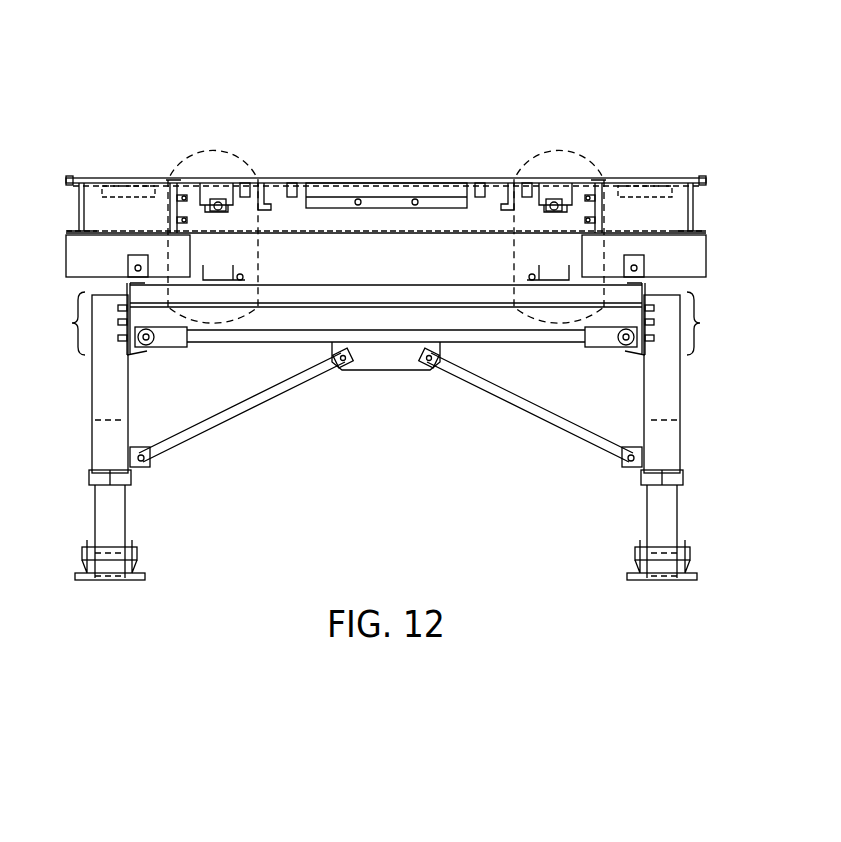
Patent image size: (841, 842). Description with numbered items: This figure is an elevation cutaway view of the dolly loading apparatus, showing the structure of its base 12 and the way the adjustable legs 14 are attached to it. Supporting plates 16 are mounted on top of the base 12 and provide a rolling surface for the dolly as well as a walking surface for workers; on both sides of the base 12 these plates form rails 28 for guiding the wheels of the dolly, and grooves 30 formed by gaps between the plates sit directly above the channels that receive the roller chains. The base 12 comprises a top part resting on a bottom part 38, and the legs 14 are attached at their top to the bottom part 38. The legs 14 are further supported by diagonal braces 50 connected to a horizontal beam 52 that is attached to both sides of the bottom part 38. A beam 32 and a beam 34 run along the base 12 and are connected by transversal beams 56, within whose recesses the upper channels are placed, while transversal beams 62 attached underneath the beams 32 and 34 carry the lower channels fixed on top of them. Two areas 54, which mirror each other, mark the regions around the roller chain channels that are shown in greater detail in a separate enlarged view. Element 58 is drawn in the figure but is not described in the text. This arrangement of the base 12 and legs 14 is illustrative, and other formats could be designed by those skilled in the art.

The base 12 is at (742, 175).
The adjustable legs 14 is at (112, 513).
The supporting plates 16 is at (92, 178).
The rails 28 is at (168, 180).
The grooves 30 is at (222, 160).
The beam 32 is at (655, 207).
The beam 34 is at (118, 207).
The bottom part 38 is at (386, 319).
The diagonal braces 50 is at (250, 405).
The horizontal beam 52 is at (238, 343).
The areas 54 is at (262, 160).
The transversal beams 56 is at (332, 230).
The roller 58 is at (222, 198).
The transversal beams 62 is at (353, 297).